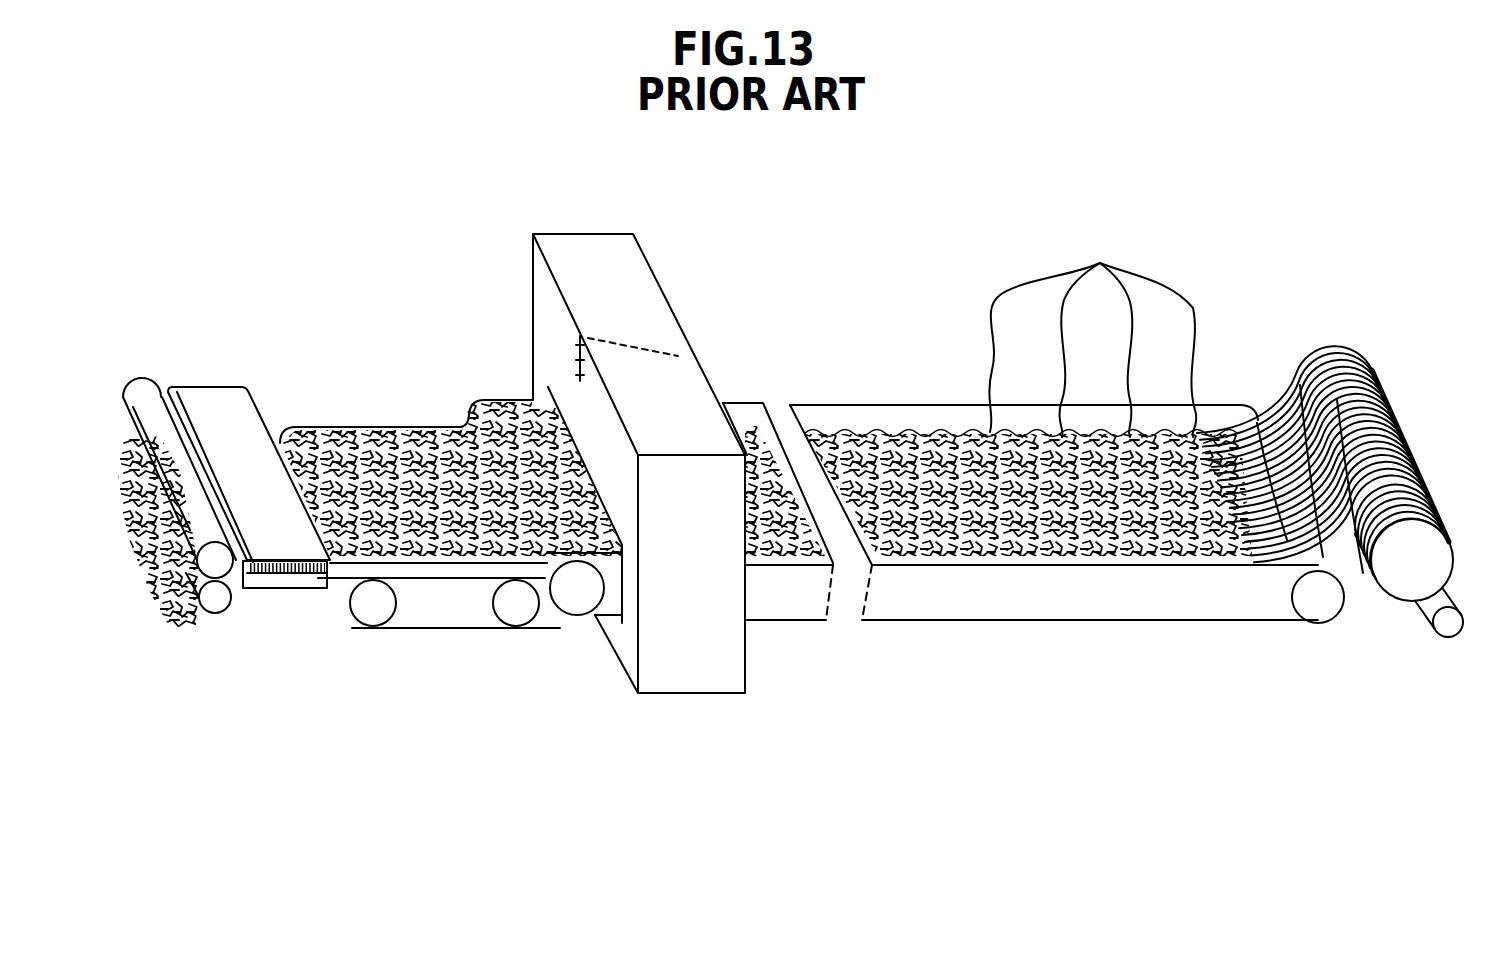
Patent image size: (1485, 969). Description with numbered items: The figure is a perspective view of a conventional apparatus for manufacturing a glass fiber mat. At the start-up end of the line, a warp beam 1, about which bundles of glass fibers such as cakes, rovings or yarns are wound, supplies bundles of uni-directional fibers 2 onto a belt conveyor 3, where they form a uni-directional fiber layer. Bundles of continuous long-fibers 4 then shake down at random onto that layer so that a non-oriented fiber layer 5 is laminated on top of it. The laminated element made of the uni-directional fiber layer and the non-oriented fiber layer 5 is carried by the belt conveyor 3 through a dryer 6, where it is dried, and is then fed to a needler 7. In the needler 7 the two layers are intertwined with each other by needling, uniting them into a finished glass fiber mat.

The warp beam 1 is at (1303, 372).
The bundles of uni-directional fibers 2 is at (1270, 407).
The belt conveyor 3 is at (923, 408).
The bundles of continuous long-fibers 4 is at (1092, 333).
The non-oriented fiber layer 5 is at (838, 427).
The dryer 6 is at (642, 272).
The needler 7 is at (220, 412).